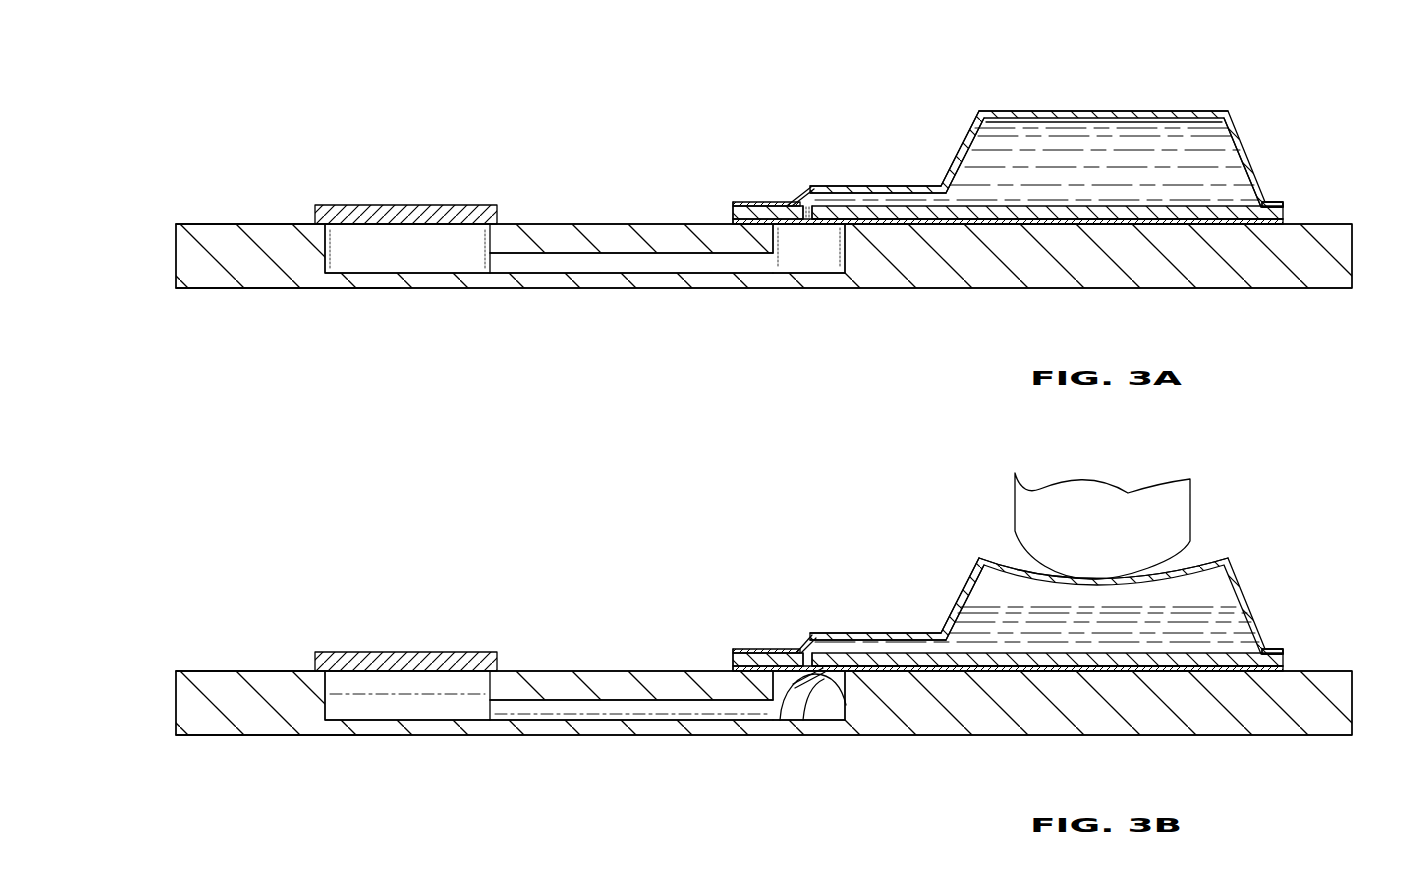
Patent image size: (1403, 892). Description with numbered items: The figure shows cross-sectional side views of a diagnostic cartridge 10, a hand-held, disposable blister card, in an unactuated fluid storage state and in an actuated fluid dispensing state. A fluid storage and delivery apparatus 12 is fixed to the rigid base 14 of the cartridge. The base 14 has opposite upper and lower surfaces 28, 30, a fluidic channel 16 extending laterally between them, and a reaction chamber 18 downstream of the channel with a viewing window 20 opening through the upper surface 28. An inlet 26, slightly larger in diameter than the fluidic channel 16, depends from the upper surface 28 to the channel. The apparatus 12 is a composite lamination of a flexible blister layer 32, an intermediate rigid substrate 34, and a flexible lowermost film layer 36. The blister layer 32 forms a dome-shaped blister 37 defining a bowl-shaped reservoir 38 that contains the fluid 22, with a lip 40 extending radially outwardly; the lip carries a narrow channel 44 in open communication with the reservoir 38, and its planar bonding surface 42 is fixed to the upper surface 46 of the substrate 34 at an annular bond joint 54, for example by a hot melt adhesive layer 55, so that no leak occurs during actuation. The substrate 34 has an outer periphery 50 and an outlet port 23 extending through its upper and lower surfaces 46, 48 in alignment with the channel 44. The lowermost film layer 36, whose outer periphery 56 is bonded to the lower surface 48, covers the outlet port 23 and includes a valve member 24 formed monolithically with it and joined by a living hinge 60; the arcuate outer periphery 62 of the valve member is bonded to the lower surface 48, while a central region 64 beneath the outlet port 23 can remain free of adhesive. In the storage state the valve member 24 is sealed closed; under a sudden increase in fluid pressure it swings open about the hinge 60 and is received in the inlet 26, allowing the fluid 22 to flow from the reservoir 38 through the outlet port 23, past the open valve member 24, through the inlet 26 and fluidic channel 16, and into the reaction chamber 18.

In FIG. 3A, the diagnostic cartridge 10 is at (715, 116).
In FIG. 3B, the diagnostic cartridge 10 is at (764, 610).
In FIG. 3A, the fluid storage and delivery apparatus 12 is at (1262, 141).
In FIG. 3B, the fluid storage and delivery apparatus 12 is at (1061, 582).
In FIG. 3A, the rigid base 14 is at (1272, 268).
In FIG. 3B, the rigid base 14 is at (764, 736).
In FIG. 3A, the fluidic channel 16 is at (657, 272).
In FIG. 3B, the fluidic channel 16 is at (631, 744).
In FIG. 3A, the reaction chamber 18 is at (425, 262).
In FIG. 3B, the reaction chamber 18 is at (407, 730).
In FIG. 3A, the viewing window 20 is at (405, 205).
In FIG. 3B, the viewing window 20 is at (406, 621).
In FIG. 3A, the fluid 22 is at (1213, 160).
In FIG. 3B, the fluid 22 is at (632, 756).
In FIG. 3A, the outlet port 23 is at (800, 205).
In FIG. 3B, the outlet port 23 is at (800, 629).
In FIG. 3A, the valve member 24 is at (798, 240).
In FIG. 3B, the valve member 24 is at (800, 728).
In FIG. 3A, the inlet 26 is at (822, 250).
In FIG. 3B, the inlet 26 is at (813, 738).
In FIG. 3A, the upper surface 28 is at (246, 224).
In FIG. 3B, the upper surface 28 is at (245, 629).
In FIG. 3A, the lower surface 30 is at (258, 288).
In FIG. 3B, the lower surface 30 is at (288, 772).
In FIG. 3A, the blister layer 32 is at (972, 120).
In FIG. 3B, the blister layer 32 is at (956, 561).
In FIG. 3A, the substrate 34 is at (975, 215).
In FIG. 3B, the substrate 34 is at (1047, 716).
In FIG. 3A, the lowermost film layer 36 is at (1215, 224).
In FIG. 3B, the lowermost film layer 36 is at (1141, 730).
In FIG. 3A, the blister 37 is at (1085, 112).
In FIG. 3B, the blister 37 is at (1107, 529).
In FIG. 3A, the reservoir 38 is at (1150, 150).
In FIG. 3B, the reservoir 38 is at (1037, 575).
In FIG. 3A, the lip 40 is at (1280, 204).
In FIG. 3B, the lip 40 is at (1285, 614).
In FIG. 3A, the bonding surface 42 is at (733, 216).
In FIG. 3B, the bonding surface 42 is at (694, 658).
In FIG. 3A, the channel 44 is at (858, 188).
In FIG. 3B, the channel 44 is at (878, 601).
In FIG. 3A, the upper surface 46 is at (912, 198).
In FIG. 3B, the upper surface 46 is at (948, 605).
In FIG. 3A, the lower surface 48 is at (900, 224).
In FIG. 3B, the lower surface 48 is at (1047, 725).
In FIG. 3A, the outer periphery 50 is at (1288, 214).
In FIG. 3B, the outer periphery 50 is at (1049, 640).
In FIG. 3A, the bond joint 54 is at (733, 212).
In FIG. 3B, the bond joint 54 is at (715, 623).
In FIG. 3A, the hot melt adhesive layer 55 is at (1288, 208).
In FIG. 3B, the hot melt adhesive layer 55 is at (1322, 621).
In FIG. 3A, the outer periphery 56 is at (1288, 222).
In FIG. 3B, the outer periphery 56 is at (1053, 658).
In FIG. 3B, the living hinge 60 is at (847, 735).
In FIG. 3B, the outer periphery 62 is at (800, 741).
In FIG. 3B, the central region 64 is at (963, 564).